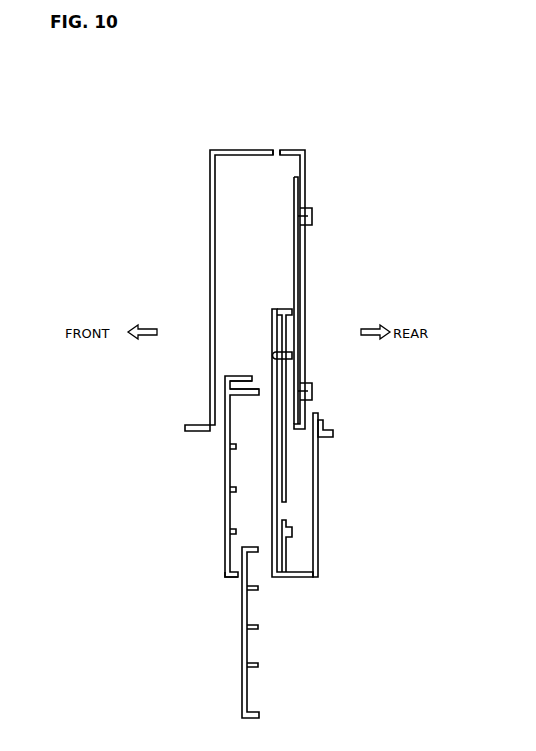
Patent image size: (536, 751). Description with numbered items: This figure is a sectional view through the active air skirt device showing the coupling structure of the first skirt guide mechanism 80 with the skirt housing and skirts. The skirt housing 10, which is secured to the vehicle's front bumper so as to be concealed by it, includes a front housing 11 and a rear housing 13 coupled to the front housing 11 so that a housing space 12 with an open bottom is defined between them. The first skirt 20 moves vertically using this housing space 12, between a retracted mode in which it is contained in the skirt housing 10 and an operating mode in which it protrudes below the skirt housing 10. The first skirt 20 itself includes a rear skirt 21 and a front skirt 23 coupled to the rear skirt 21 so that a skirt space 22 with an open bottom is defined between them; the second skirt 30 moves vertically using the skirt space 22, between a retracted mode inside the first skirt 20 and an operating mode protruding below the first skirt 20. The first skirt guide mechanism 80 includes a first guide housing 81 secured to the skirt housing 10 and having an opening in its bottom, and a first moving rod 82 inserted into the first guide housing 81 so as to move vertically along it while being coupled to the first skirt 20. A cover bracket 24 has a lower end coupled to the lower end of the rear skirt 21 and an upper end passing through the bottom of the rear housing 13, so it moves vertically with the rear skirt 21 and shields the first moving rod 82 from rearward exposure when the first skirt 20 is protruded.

The skirt housing 10 is at (317, 159).
The front housing 11 is at (210, 184).
The housing space 12 is at (257, 185).
The rear housing 13 is at (305, 179).
The first skirt 20 is at (226, 503).
The rear skirt 21 is at (277, 449).
The skirt space 22 is at (245, 423).
The front skirt 23 is at (227, 540).
The cover bracket 24 is at (318, 534).
The second skirt 30 is at (242, 653).
The first skirt guide mechanism 80 is at (292, 280).
The first guide housing 81 is at (290, 240).
The first moving rod 82 is at (285, 458).